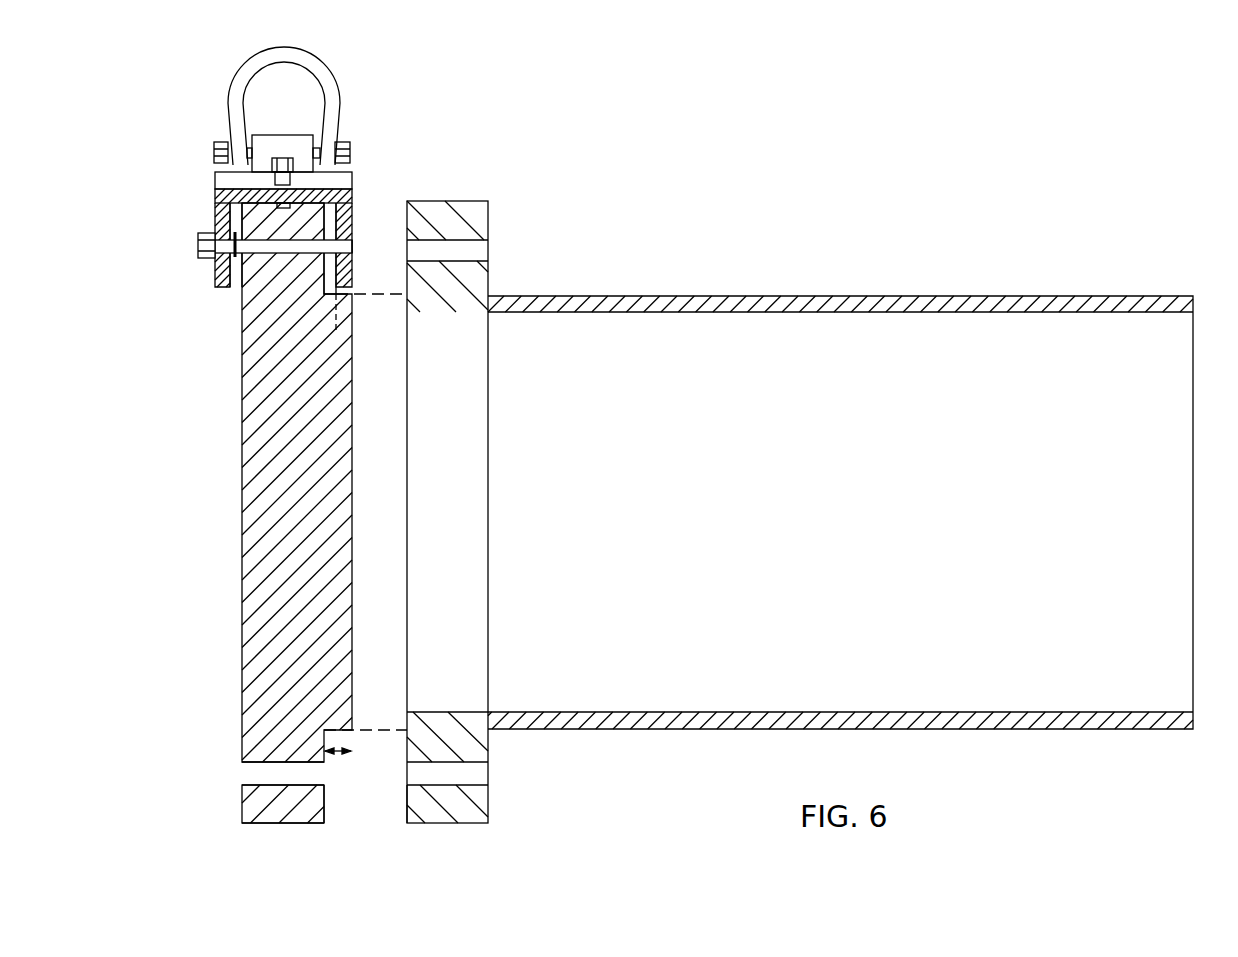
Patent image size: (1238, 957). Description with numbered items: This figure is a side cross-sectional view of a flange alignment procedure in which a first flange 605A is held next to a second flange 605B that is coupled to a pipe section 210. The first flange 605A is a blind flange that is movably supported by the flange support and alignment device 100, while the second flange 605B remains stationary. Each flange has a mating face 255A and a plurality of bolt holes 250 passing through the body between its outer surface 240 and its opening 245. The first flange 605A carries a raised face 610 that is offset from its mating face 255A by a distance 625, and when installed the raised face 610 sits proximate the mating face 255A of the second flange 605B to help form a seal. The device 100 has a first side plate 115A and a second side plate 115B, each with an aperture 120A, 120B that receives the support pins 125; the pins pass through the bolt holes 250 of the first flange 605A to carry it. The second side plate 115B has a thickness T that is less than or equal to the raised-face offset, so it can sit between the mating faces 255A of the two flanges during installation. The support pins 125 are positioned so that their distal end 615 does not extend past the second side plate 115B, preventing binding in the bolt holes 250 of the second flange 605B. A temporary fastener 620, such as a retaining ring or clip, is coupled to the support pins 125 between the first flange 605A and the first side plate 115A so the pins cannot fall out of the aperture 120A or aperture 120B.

The flange support and alignment device 100 is at (220, 122).
The support pins 125 is at (272, 245).
The first side plate 115A is at (215, 203).
The second side plate 115B is at (352, 203).
The aperture 120A is at (212, 227).
The aperture 120B is at (364, 237).
The first flange 605A is at (240, 805).
The second flange 605B is at (462, 205).
The pipe section 210 is at (815, 296).
The bolt holes 250 is at (478, 250).
The mating face 255A is at (345, 838).
The outer surface 240 is at (260, 824).
The raised face 610 is at (355, 640).
The distal end 615 is at (350, 243).
The temporary fastener 620 is at (234, 260).
The distance 625 is at (337, 757).
The opening 245 is at (430, 487).
The thickness T is at (342, 338).